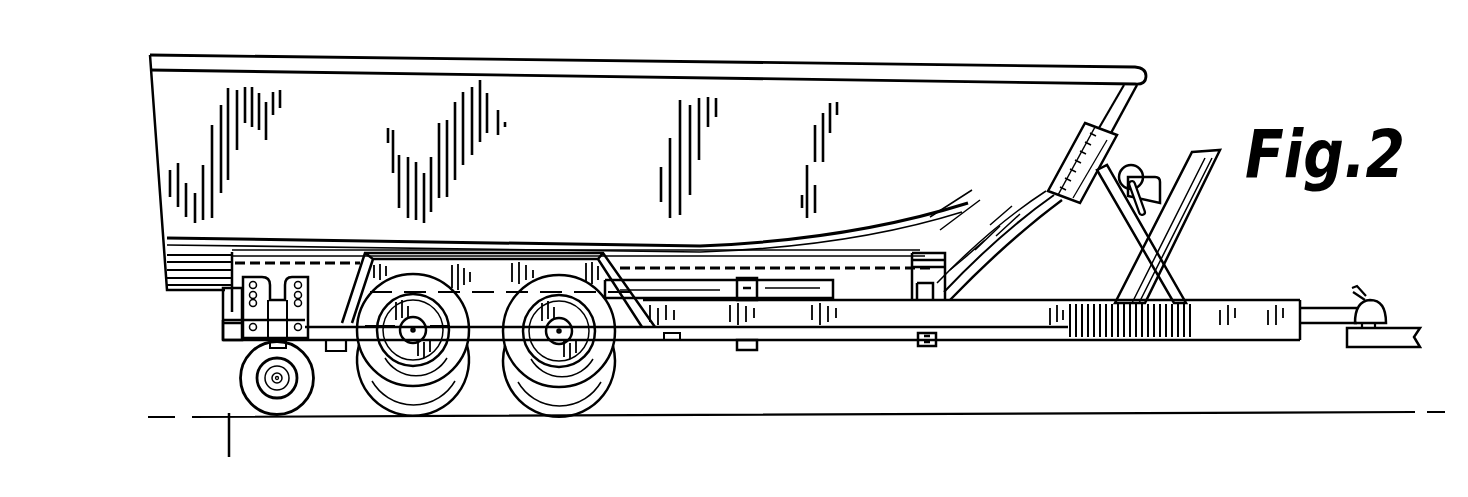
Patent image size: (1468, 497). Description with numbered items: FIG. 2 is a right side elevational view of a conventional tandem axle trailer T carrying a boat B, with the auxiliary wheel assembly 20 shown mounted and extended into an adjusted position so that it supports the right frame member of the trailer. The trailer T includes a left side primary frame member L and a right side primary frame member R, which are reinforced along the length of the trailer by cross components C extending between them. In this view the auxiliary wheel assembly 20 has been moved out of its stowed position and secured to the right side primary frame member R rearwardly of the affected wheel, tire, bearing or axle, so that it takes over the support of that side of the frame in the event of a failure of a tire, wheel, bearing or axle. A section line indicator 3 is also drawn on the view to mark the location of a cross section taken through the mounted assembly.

The boat B is at (536, 50).
The trailer T is at (1195, 229).
The section line indicator 3 is at (225, 273).
The auxiliary wheel assembly 20 is at (244, 352).
The cross components C is at (342, 350).
The left side primary frame member L is at (674, 337).
The right side primary frame member R is at (964, 322).